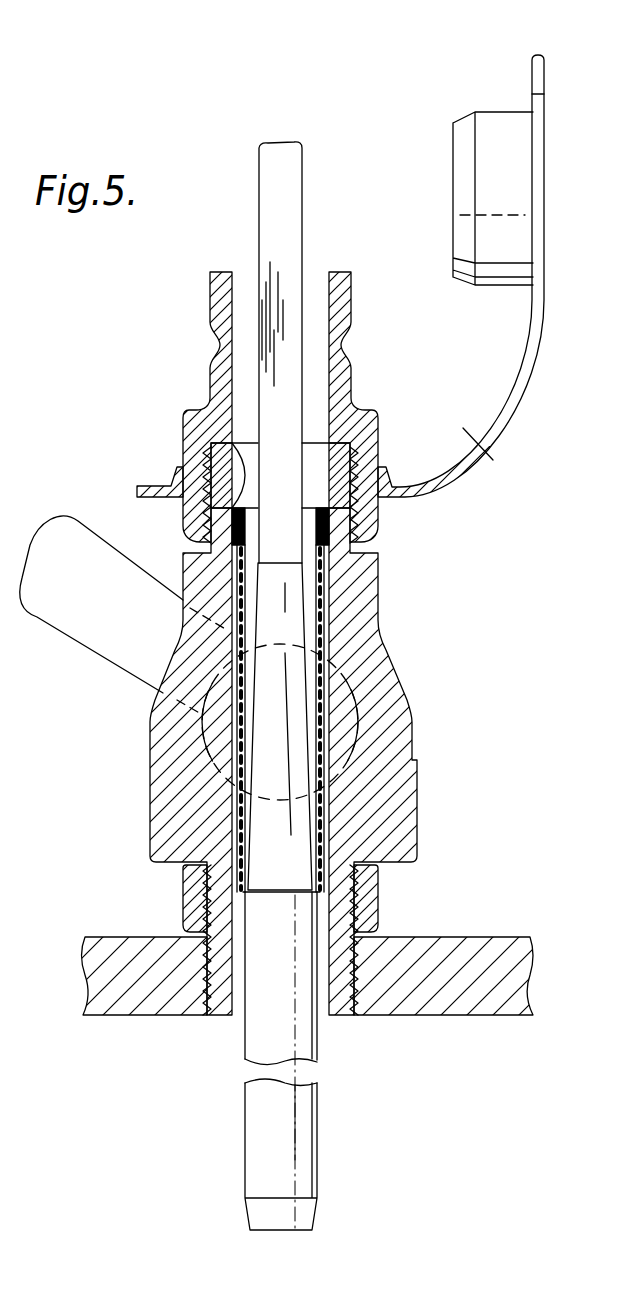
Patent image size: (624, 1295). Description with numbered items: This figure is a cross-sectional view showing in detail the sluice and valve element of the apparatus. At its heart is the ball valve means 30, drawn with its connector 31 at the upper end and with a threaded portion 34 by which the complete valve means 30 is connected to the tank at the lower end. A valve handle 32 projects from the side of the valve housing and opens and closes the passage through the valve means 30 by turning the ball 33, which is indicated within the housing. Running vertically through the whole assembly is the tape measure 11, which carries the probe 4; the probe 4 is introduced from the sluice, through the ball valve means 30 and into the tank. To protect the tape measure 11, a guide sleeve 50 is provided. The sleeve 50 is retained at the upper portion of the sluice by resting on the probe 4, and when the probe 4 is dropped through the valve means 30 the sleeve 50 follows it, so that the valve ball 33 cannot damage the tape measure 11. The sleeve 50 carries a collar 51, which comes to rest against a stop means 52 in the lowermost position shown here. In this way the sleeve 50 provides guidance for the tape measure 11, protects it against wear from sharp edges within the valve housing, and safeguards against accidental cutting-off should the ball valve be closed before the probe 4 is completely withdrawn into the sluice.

The probe 4 is at (307, 1165).
The tape measure 11 is at (288, 224).
The valve means 30 is at (388, 688).
The connector 31 is at (352, 355).
The valve handle 32 is at (84, 535).
The ball 33 is at (345, 730).
The threaded portion 34 is at (363, 957).
The guide sleeve 50 is at (320, 832).
The collar 51 is at (222, 443).
The stop means 52 is at (331, 570).